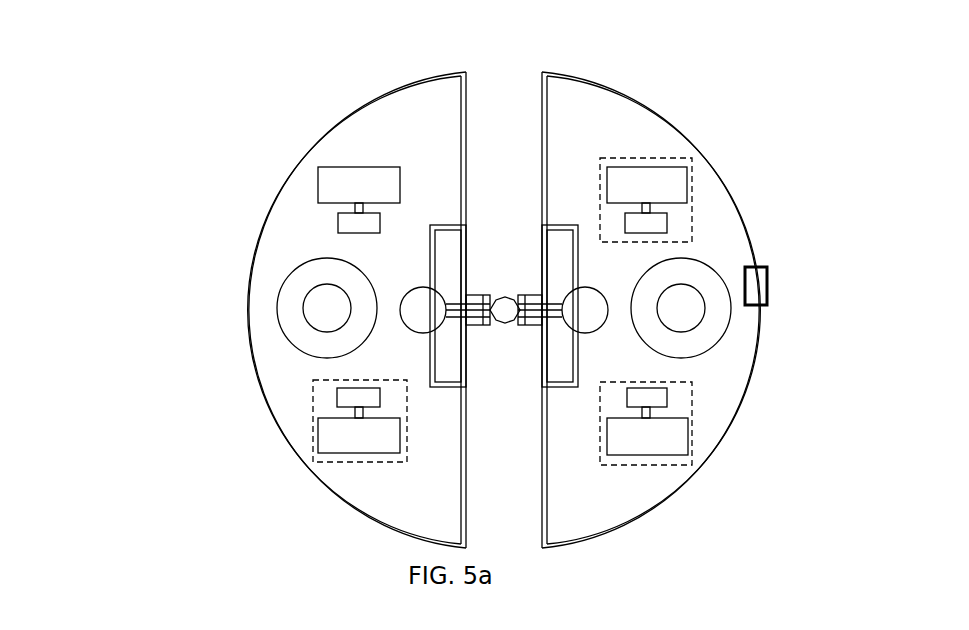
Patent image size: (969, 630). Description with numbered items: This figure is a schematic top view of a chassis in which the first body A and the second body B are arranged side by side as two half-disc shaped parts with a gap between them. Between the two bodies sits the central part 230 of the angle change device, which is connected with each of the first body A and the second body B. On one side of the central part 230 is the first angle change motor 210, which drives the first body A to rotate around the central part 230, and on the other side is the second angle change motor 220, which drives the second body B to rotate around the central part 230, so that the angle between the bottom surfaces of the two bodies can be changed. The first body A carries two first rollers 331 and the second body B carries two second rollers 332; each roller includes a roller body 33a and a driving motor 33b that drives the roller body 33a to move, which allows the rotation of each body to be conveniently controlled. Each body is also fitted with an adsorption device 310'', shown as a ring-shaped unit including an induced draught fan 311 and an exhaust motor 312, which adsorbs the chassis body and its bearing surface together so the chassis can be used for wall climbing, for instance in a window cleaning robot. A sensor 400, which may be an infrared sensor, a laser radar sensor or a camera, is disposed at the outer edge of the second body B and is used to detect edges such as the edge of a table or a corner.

The first body A is at (428, 118).
The second body B is at (577, 108).
The first angle change motor 210 is at (417, 302).
The second angle change motor 220 is at (702, 245).
The central part 230 is at (505, 303).
The adsorption device 310'' is at (204, 290).
The induced draught fan 311 is at (295, 308).
The exhaust motor 312 is at (312, 292).
The first roller 331 is at (212, 112).
The roller body 33a is at (321, 126).
The driving motor 33b is at (350, 222).
The second roller 332 is at (693, 172).
The sensor 400 is at (767, 272).